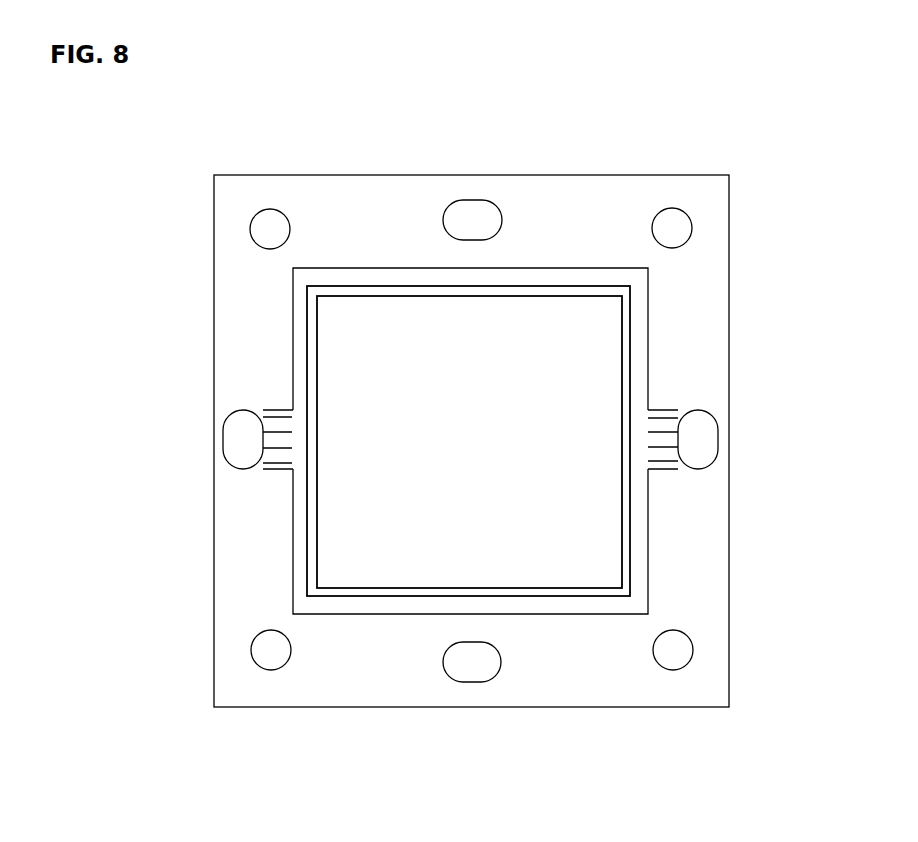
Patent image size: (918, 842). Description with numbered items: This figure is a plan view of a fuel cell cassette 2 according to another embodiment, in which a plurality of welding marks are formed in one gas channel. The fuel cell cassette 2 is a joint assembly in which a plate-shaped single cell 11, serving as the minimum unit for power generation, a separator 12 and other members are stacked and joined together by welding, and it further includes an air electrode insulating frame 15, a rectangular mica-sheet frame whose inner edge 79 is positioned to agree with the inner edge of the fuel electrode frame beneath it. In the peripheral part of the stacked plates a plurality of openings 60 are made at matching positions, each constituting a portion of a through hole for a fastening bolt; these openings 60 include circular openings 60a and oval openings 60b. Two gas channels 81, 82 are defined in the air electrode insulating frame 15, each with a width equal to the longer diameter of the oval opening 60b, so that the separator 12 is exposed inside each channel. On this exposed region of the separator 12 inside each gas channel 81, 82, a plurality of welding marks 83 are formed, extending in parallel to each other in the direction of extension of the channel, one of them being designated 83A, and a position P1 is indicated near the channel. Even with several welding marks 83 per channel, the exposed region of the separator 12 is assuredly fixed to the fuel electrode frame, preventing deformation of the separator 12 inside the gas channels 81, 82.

The fuel cell cassette 2 is at (161, 177).
The single cell 11 is at (332, 367).
The separator 12 is at (298, 331).
The air electrode insulating frame 15 is at (228, 261).
The openings 60 is at (675, 214).
The circular openings 60a is at (270, 214).
The oval openings 60b is at (480, 205).
The inner edge of the air electrode insulating frame 79 is at (636, 336).
The gas channel 81 is at (283, 410).
The gas channel 82 is at (670, 413).
The welding marks 83 is at (667, 462).
The terminal 83A is at (282, 448).
The position P1 is at (670, 464).